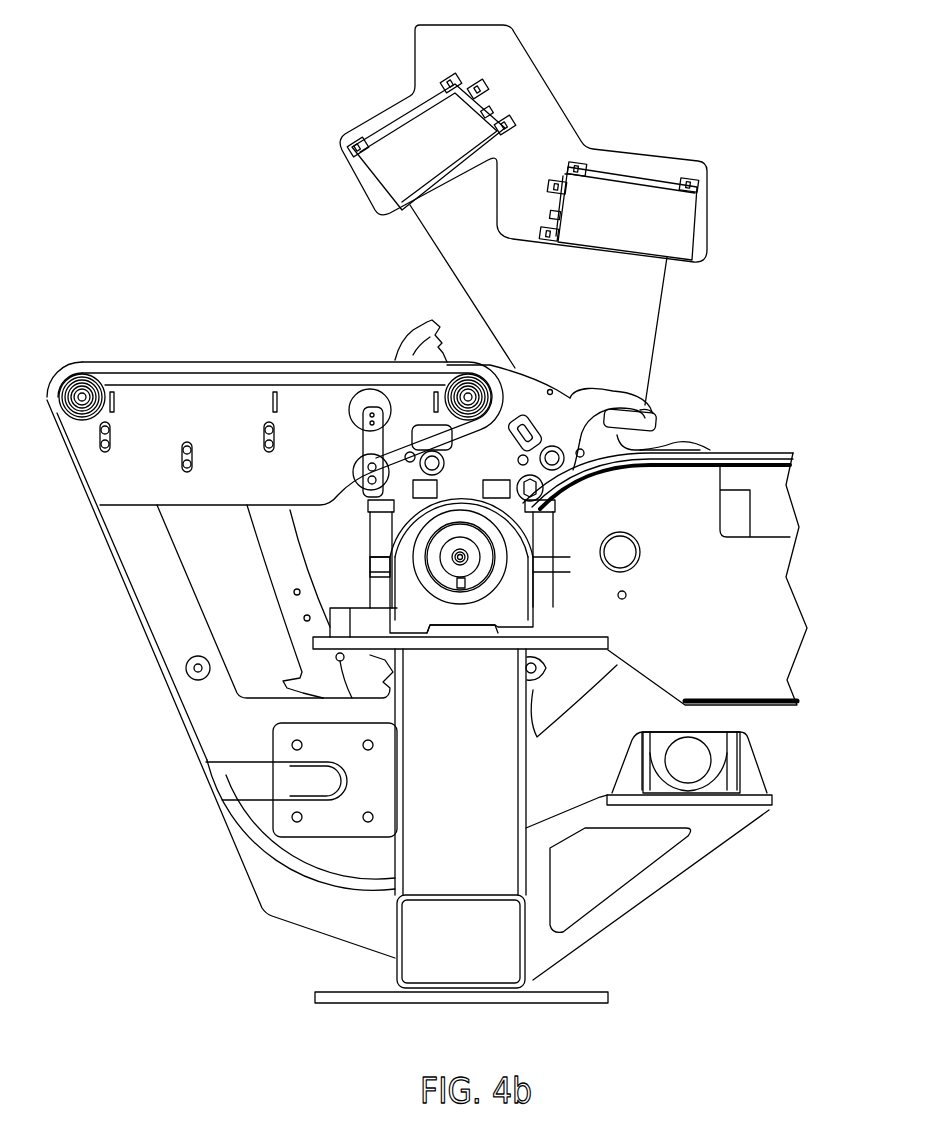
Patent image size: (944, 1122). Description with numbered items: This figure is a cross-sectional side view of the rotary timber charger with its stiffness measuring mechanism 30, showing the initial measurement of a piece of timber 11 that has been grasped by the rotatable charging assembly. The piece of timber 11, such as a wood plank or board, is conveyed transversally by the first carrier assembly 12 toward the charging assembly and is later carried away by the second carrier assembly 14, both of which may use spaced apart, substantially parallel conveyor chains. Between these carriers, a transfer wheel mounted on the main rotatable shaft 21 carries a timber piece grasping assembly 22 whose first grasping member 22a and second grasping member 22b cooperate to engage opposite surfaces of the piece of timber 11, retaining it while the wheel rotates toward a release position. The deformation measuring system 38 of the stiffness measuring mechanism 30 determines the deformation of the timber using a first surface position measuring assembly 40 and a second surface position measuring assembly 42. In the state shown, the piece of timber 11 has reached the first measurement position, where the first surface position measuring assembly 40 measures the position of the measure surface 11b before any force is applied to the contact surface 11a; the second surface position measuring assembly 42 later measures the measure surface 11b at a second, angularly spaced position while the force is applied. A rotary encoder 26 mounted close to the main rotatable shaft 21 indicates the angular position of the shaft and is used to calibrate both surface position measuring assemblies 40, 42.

The deformation measuring system 38 is at (358, 84).
The second surface position measuring assembly 42 is at (380, 172).
The first surface position measuring assembly 40 is at (677, 230).
The stiffness measuring mechanism 30 is at (135, 272).
The second carrier assembly 14 is at (102, 333).
The timber piece grasping assembly 22 is at (573, 380).
The second grasping member 22b is at (590, 393).
The piece of timber 11 is at (657, 418).
The measure surface 11b is at (653, 405).
The contact surface 11a is at (618, 435).
The first grasping member 22a is at (673, 443).
The first carrier assembly 12 is at (790, 427).
The rotary encoder 26 is at (437, 570).
The main rotatable shaft 21 is at (465, 558).